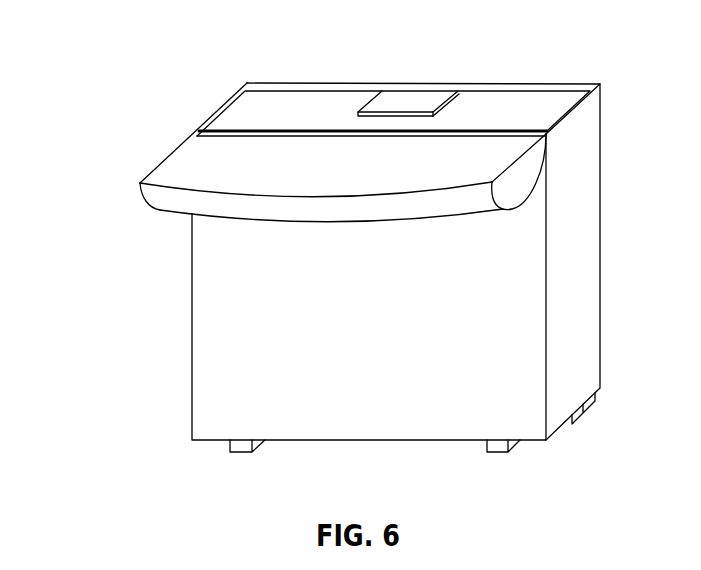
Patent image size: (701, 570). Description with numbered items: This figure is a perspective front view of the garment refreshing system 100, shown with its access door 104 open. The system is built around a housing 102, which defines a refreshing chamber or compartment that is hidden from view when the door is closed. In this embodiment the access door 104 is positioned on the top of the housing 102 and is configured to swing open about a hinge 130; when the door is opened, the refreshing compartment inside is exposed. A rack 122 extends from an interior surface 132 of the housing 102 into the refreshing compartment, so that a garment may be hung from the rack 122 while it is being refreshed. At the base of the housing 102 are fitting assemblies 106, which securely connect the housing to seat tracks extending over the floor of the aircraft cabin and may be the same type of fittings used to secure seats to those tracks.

The garment refreshing system 100 is at (134, 63).
The housing 102 is at (192, 303).
The access door 104 is at (141, 197).
The fitting assemblies 106 is at (242, 453).
The rack 122 is at (403, 107).
The hinge 130 is at (500, 137).
The interior surface 132 is at (310, 105).